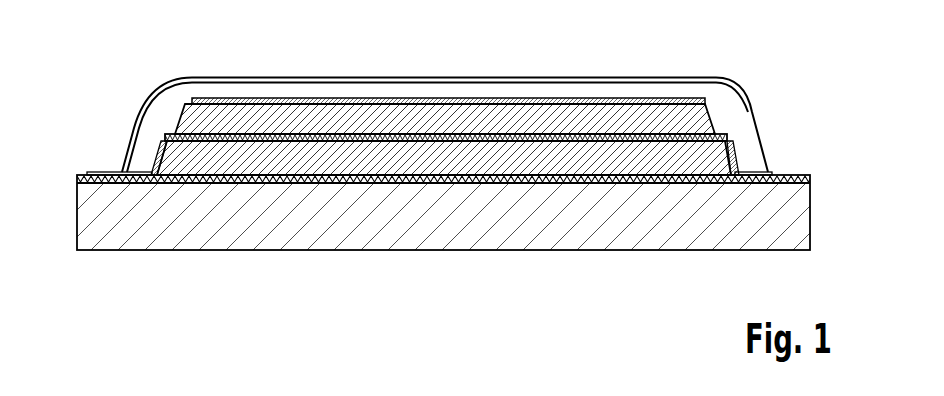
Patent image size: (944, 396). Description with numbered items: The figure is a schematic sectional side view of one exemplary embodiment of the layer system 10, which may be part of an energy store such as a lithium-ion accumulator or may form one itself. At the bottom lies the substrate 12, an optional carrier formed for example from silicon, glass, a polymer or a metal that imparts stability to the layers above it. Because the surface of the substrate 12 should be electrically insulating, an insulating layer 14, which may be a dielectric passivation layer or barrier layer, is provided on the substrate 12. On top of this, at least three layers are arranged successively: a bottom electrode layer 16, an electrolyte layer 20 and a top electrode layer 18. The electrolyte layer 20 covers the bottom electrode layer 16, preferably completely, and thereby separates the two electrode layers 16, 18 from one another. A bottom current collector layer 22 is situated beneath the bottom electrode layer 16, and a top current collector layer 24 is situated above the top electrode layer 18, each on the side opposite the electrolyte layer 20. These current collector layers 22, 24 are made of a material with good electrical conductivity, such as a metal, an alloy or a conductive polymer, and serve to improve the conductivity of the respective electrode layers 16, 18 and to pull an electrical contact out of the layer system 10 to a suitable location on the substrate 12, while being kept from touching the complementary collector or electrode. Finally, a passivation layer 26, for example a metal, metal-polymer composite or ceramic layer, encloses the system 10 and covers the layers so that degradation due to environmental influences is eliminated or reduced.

The layer system 10 is at (435, 158).
The substrate 12 is at (461, 229).
The insulating layer 14 is at (808, 175).
The bottom electrode layer 16 is at (708, 158).
The top electrode layer 18 is at (605, 120).
The electrolyte layer 20 is at (718, 133).
The bottom current collector layer 22 is at (107, 174).
The top current collector layer 24 is at (729, 157).
The passivation layer 26 is at (479, 90).